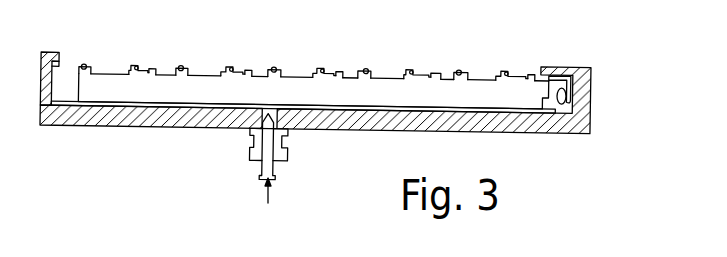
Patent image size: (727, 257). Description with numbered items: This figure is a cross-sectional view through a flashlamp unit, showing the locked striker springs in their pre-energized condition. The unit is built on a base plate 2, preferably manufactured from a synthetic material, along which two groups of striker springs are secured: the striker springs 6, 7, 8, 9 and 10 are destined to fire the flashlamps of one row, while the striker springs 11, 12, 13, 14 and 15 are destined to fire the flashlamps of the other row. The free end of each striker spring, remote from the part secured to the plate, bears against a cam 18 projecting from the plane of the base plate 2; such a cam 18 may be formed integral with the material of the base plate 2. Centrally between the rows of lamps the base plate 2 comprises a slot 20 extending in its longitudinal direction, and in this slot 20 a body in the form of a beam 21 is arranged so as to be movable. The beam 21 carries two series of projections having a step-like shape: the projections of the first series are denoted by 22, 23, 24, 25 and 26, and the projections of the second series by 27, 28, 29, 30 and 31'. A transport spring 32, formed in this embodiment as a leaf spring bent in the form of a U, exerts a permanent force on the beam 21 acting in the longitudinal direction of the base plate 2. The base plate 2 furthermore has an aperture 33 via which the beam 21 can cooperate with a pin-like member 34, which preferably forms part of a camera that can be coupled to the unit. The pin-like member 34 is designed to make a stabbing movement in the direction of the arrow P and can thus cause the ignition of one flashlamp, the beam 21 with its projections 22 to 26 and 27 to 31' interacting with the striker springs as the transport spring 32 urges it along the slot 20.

The base plate 2 is at (377, 122).
The striker spring 6 is at (82, 63).
The striker spring 7 is at (180, 65).
The striker spring 8 is at (273, 66).
The striker spring 9 is at (365, 68).
The striker spring 10 is at (458, 70).
The striker spring 11 is at (139, 66).
The striker spring 12 is at (231, 66).
The striker spring 13 is at (322, 67).
The striker spring 14 is at (411, 69).
The striker spring 15 is at (507, 71).
The cam 18 is at (131, 66).
The slot 20 is at (61, 93).
The beam 21 is at (124, 95).
The projection 22 is at (89, 66).
The projection 23 is at (188, 67).
The projection 24 is at (281, 68).
The projection 25 is at (373, 69).
The projection 26 is at (470, 71).
The projection 27 is at (151, 67).
The projection 28 is at (245, 68).
The projection 29 is at (338, 69).
The projection 30 is at (435, 71).
The projection 31' is at (535, 46).
The transport spring 32 is at (568, 102).
The aperture 33 is at (278, 117).
The pin-like member 34 is at (267, 169).
The arrow P is at (270, 190).